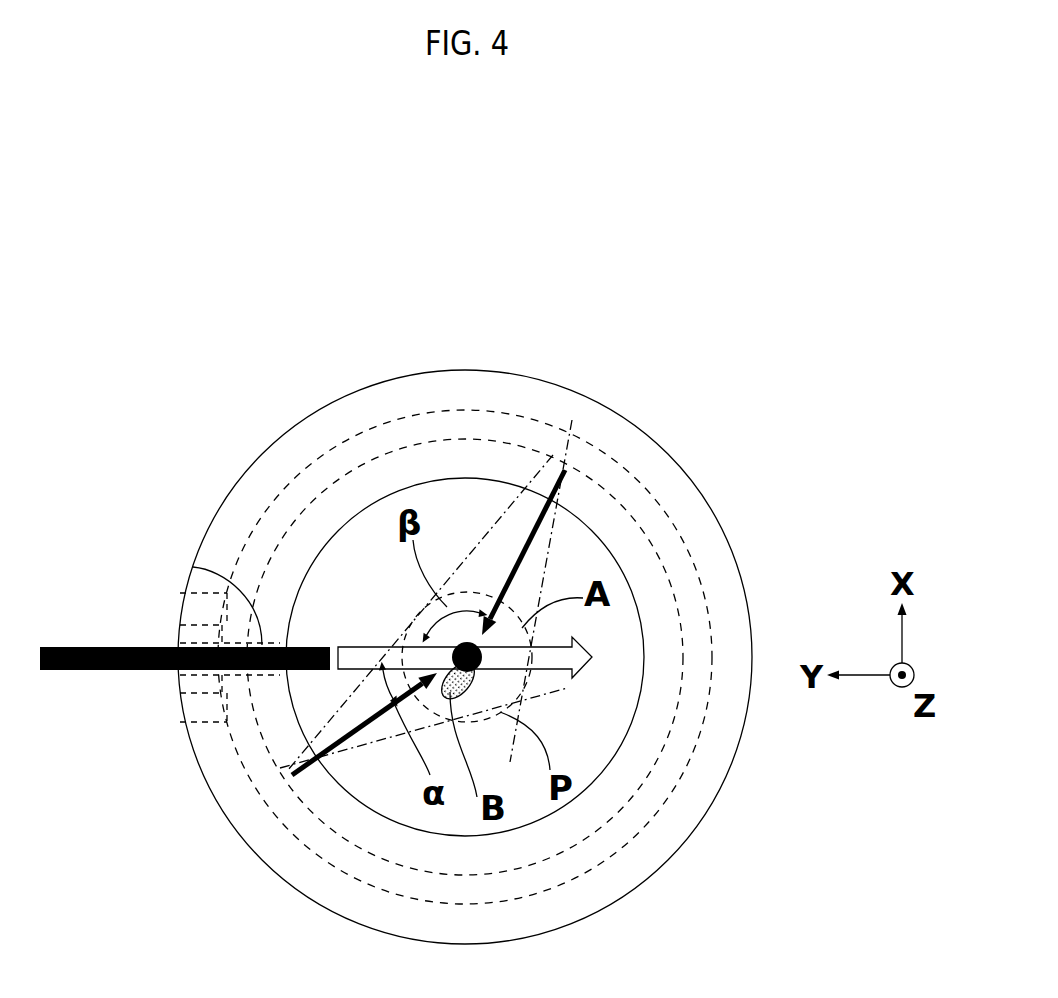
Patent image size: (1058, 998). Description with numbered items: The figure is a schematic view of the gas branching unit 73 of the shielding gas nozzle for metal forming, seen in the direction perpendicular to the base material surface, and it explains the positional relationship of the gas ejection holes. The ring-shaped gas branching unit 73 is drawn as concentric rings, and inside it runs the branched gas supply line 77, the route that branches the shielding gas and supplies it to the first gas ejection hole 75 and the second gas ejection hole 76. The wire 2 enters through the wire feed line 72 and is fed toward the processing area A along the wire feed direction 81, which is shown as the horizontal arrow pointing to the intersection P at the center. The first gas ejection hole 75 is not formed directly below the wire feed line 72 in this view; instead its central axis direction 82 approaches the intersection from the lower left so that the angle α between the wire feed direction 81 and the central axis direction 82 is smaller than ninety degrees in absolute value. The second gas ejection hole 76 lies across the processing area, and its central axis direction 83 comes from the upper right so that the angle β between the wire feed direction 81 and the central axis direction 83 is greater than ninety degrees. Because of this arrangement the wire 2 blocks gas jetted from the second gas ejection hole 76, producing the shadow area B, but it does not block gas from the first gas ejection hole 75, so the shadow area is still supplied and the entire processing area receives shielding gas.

The wire 2 is at (125, 672).
The wire feed line 72 is at (193, 567).
The gas branching unit 73 is at (673, 852).
The first gas ejection hole 75 is at (312, 782).
The second gas ejection hole 76 is at (572, 488).
The branched gas supply line 77 is at (695, 760).
The wire feed direction 81 is at (380, 647).
The central axis direction of the first gas ejection hole 82 is at (383, 712).
The central axis direction of the second gas ejection hole 83 is at (510, 578).